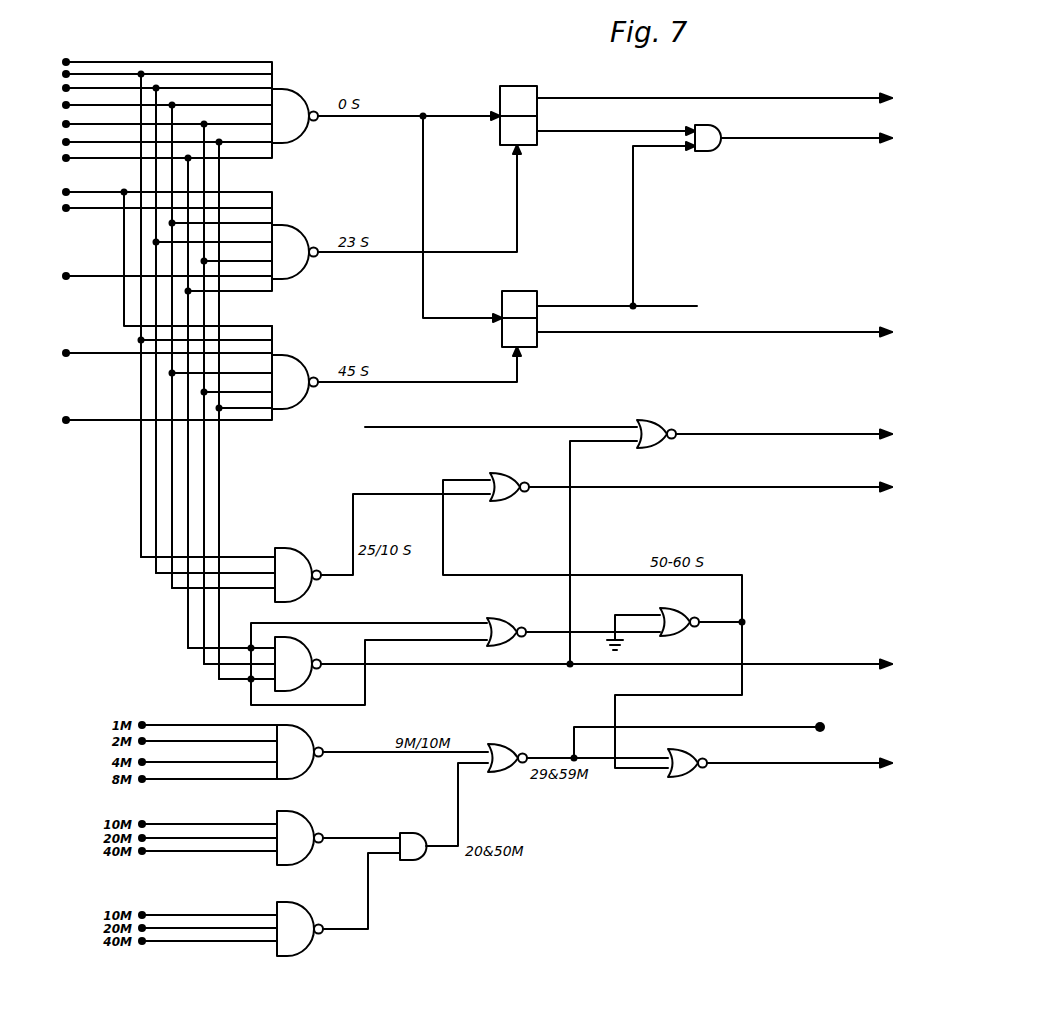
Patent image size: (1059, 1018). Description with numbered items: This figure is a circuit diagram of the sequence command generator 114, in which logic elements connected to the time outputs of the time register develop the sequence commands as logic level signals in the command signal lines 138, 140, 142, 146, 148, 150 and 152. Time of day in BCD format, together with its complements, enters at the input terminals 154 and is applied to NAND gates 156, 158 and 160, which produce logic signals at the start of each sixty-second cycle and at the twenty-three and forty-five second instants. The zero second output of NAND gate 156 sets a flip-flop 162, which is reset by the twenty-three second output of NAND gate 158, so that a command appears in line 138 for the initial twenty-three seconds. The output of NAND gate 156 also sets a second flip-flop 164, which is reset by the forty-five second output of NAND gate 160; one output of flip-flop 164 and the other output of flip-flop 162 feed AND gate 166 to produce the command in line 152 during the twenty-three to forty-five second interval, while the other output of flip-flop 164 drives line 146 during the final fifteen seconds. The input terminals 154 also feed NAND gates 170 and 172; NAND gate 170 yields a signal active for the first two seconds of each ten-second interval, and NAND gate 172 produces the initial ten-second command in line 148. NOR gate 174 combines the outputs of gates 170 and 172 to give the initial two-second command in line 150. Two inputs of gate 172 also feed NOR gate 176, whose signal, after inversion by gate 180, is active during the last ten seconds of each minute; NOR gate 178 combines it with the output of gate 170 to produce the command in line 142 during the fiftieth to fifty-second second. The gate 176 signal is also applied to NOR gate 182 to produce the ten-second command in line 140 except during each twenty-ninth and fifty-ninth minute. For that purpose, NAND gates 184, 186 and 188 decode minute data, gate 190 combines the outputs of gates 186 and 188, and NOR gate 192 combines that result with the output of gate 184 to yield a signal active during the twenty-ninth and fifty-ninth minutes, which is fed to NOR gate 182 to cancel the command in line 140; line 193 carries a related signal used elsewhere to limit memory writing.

The sequence command generator 114 is at (582, 844).
The command signal line 138 is at (837, 100).
The command signal line 140 is at (760, 764).
The command signal line 142 is at (828, 485).
The command signal line 146 is at (835, 335).
The command signal line 148 is at (836, 663).
The command signal line 150 is at (825, 435).
The command signal line 152 is at (847, 140).
The input terminals 154 is at (68, 56).
The NAND gate 156 is at (306, 99).
The NAND gate 158 is at (284, 231).
The NAND gate 160 is at (297, 368).
The flip-flop 162 is at (512, 98).
The second flip-flop 164 is at (521, 297).
The AND gate 166 is at (710, 141).
The NAND gate 170 is at (293, 562).
The NAND gate 172 is at (298, 652).
The NOR gate 174 is at (646, 420).
The NOR gate 176 is at (498, 620).
The NOR gate 178 is at (497, 478).
The gate 180 is at (670, 612).
The NOR gate 182 is at (697, 756).
The NAND gate 184 is at (301, 746).
The NAND gate 186 is at (297, 827).
The NAND gate 188 is at (308, 938).
The gate 190 is at (411, 850).
The NOR gate 192 is at (498, 773).
The line 193 is at (716, 727).